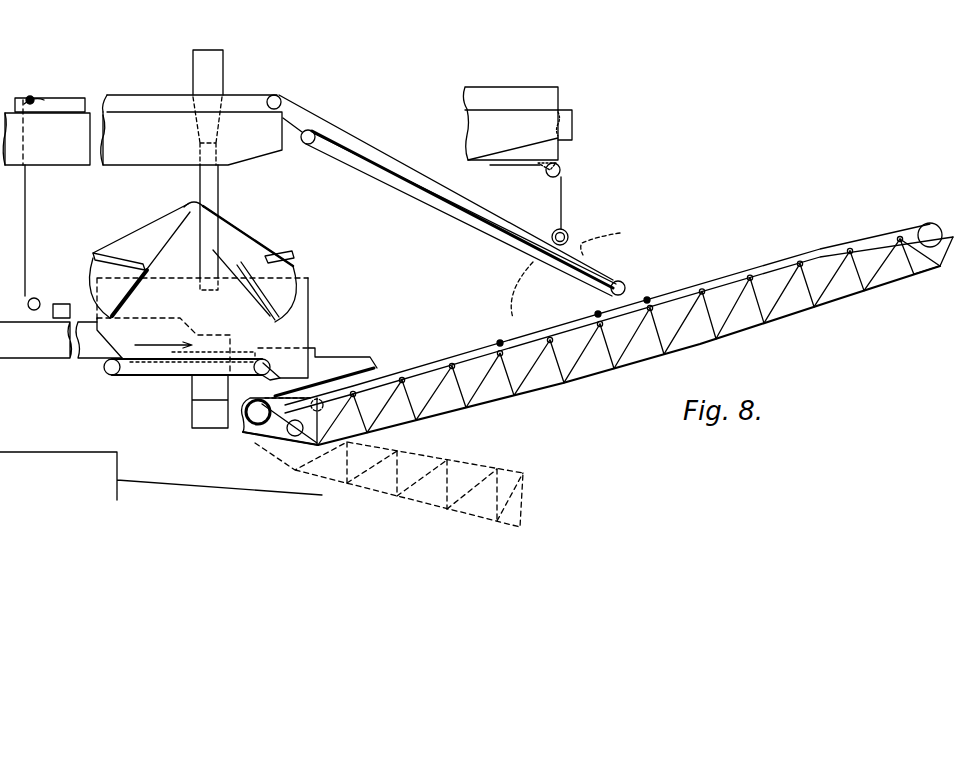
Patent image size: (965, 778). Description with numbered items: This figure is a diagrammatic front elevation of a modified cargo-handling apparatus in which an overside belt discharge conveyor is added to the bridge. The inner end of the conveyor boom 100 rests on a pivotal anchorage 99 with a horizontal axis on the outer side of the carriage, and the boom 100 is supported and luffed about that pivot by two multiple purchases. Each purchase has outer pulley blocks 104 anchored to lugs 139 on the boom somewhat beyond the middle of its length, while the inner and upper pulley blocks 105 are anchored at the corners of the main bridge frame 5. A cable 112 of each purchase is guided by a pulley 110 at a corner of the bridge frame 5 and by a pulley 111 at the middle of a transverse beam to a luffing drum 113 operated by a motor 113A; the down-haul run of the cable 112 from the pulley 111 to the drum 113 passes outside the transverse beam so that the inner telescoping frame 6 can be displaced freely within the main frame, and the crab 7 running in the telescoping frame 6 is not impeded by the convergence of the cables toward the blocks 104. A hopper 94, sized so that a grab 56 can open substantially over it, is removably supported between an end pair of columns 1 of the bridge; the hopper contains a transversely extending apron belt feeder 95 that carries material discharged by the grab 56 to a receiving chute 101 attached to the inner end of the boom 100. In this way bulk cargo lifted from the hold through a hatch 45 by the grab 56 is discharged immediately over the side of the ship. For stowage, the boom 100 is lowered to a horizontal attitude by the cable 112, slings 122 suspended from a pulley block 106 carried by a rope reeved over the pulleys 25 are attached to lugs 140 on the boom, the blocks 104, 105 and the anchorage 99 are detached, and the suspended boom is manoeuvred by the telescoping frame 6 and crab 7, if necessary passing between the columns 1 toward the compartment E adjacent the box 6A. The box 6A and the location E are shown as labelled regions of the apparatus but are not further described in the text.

The columns 1 is at (210, 185).
The main bridge frame 5 is at (191, 130).
The inner telescoping frame 6 is at (470, 151).
The crab 7 is at (562, 147).
The collector box 6A is at (190, 401).
The pulleys 25 is at (549, 176).
The hatch 45 is at (161, 476).
The grab 56 is at (240, 250).
The hopper 94 is at (300, 301).
The apron belt feeder 95 is at (152, 374).
The pivotal anchorage 99 is at (262, 410).
The conveyor boom 100 is at (553, 383).
The receiving chute 101 is at (345, 360).
The outer pulley blocks 104 is at (632, 270).
The upper pulley blocks 105 is at (316, 134).
The pulley block 106 is at (567, 232).
The pulleys 110 is at (281, 102).
The pulley 111 is at (35, 100).
The cable 112 is at (145, 100).
The luffing drum 113 is at (36, 298).
The motor 113A is at (62, 304).
The slings 122 is at (508, 268).
The lugs 139 is at (647, 300).
The lugs 140 is at (598, 314).
The elevator section E is at (61, 340).